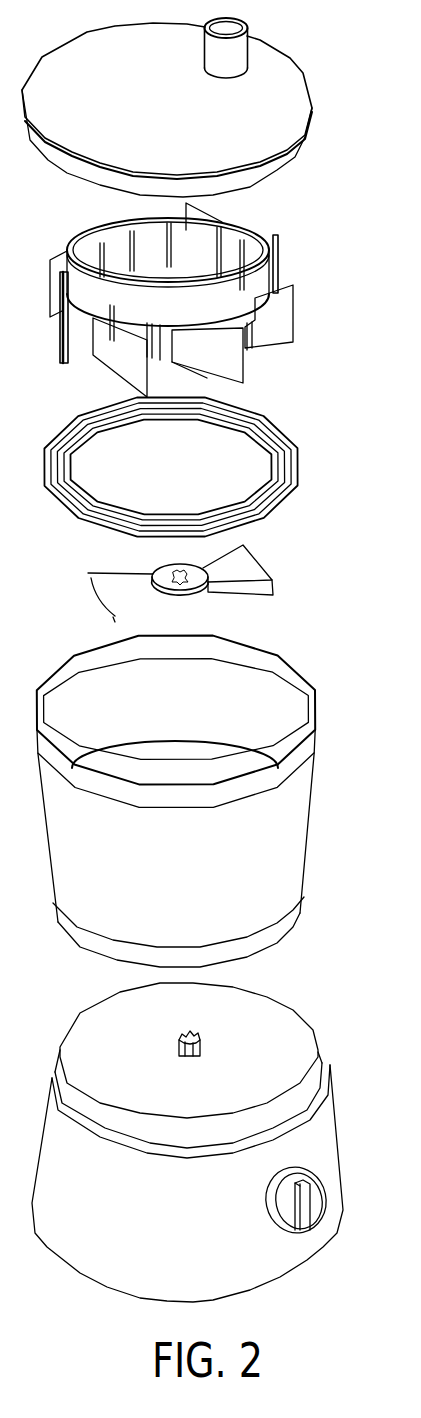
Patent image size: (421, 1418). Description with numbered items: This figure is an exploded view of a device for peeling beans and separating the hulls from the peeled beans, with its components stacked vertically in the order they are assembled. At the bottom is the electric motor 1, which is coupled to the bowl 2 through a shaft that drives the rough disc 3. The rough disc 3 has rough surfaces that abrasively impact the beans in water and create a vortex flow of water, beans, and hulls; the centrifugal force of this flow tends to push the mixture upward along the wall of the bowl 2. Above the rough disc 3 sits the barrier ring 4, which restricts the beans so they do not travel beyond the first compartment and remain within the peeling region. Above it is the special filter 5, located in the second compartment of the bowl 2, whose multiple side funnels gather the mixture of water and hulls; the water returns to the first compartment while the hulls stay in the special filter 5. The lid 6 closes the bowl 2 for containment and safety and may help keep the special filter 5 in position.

The electric motor 1 is at (310, 1143).
The bowl 2 is at (280, 830).
The rough disc 3 is at (250, 571).
The barrier ring 4 is at (298, 448).
The special filter 5 is at (283, 305).
The lid 6 is at (282, 97).